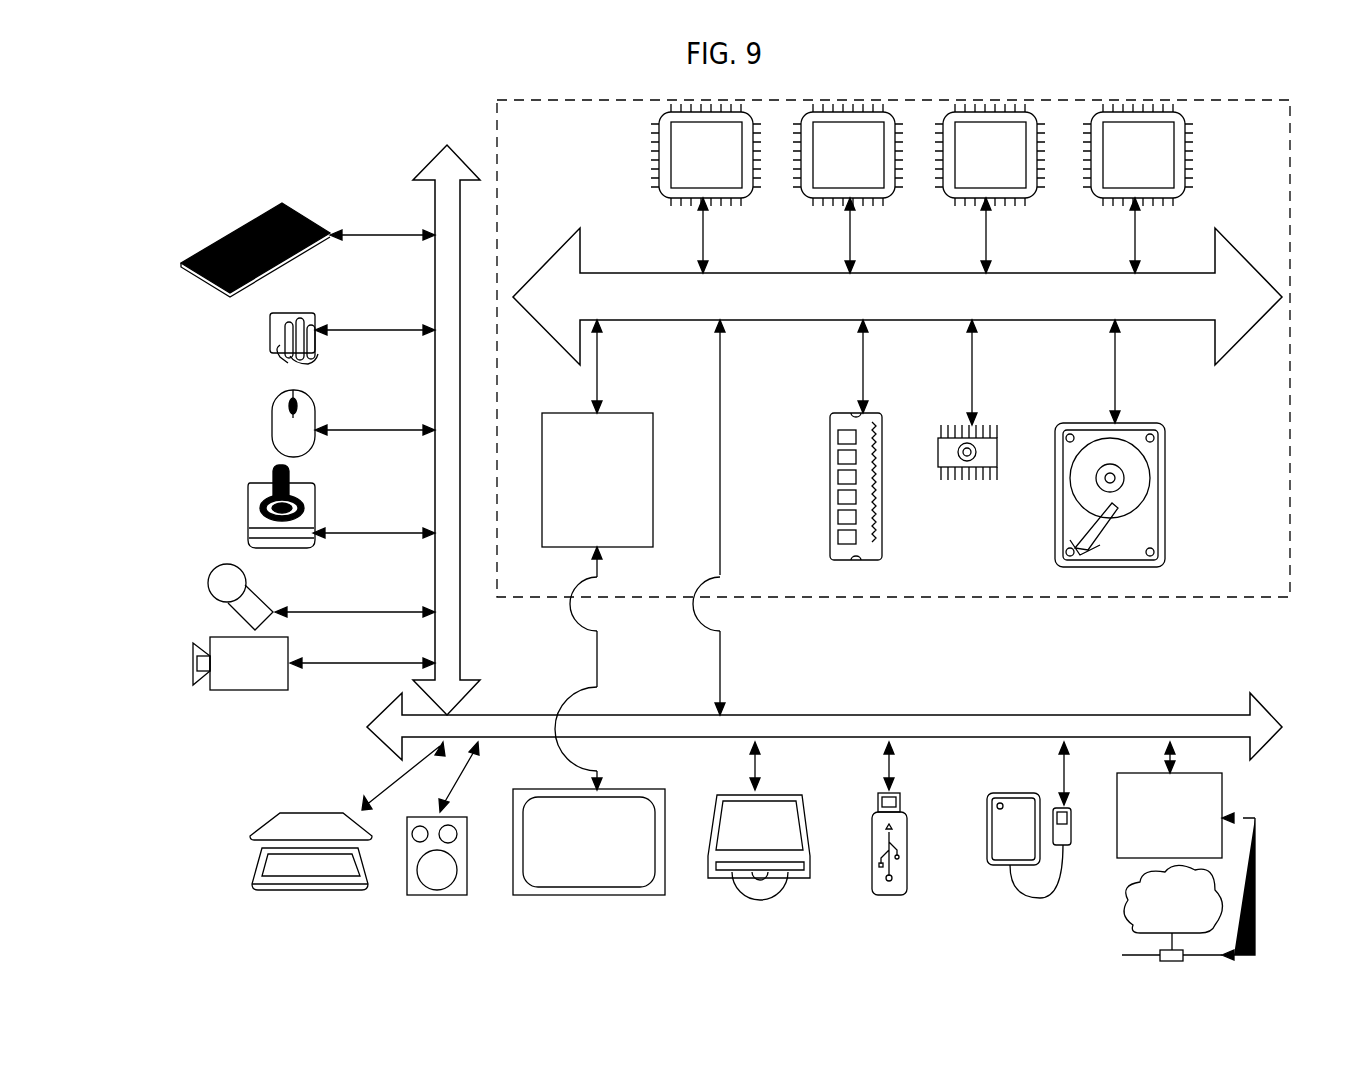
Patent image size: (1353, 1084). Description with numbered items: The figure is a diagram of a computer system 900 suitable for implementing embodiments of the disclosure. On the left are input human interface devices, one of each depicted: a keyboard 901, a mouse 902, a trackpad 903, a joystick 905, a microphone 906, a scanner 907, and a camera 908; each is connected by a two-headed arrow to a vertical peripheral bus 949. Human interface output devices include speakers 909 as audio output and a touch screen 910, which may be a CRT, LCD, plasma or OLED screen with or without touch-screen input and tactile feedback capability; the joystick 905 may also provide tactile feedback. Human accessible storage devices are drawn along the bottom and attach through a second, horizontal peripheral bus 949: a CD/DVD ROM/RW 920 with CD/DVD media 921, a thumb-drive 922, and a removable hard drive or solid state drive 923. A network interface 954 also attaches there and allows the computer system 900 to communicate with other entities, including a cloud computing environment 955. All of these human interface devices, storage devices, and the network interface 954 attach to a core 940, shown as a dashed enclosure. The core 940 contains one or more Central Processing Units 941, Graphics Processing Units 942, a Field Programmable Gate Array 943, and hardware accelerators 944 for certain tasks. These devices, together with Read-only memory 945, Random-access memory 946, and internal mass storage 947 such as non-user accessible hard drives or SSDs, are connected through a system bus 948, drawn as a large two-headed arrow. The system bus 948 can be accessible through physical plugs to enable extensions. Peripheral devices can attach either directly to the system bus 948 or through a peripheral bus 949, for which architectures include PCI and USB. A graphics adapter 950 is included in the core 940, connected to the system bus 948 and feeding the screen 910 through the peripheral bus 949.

The computer system 900 is at (240, 149).
The keyboard 901 is at (183, 262).
The mouse 902 is at (270, 425).
The trackpad 903 is at (270, 343).
The joystick 905 is at (248, 530).
The microphone 906 is at (210, 585).
The scanner 907 is at (258, 873).
The camera 908 is at (200, 662).
The speakers 909 is at (437, 893).
The touch screen 910 is at (578, 895).
The CD/DVD ROM/RW 920 is at (800, 880).
The CD/DVD media 921 is at (740, 892).
The thumb-drive 922 is at (885, 895).
The removable hard drive or solid state drive 923 is at (995, 866).
The core 940 is at (917, 597).
The Central Processing Unit 941 is at (706, 188).
The Graphics Processing Unit 942 is at (848, 188).
The Field Programmable Gate Array 943 is at (990, 188).
The hardware accelerator 944 is at (1138, 188).
The Read-only memory 945 is at (960, 480).
The Random-access memory 946 is at (830, 483).
The internal mass storage 947 is at (1073, 420).
The system bus 948 is at (1026, 309).
The peripheral bus 949 is at (435, 185).
The graphics adapter 950 is at (597, 555).
The network interface 954 is at (1186, 851).
The cloud computing environment 955 is at (1125, 922).